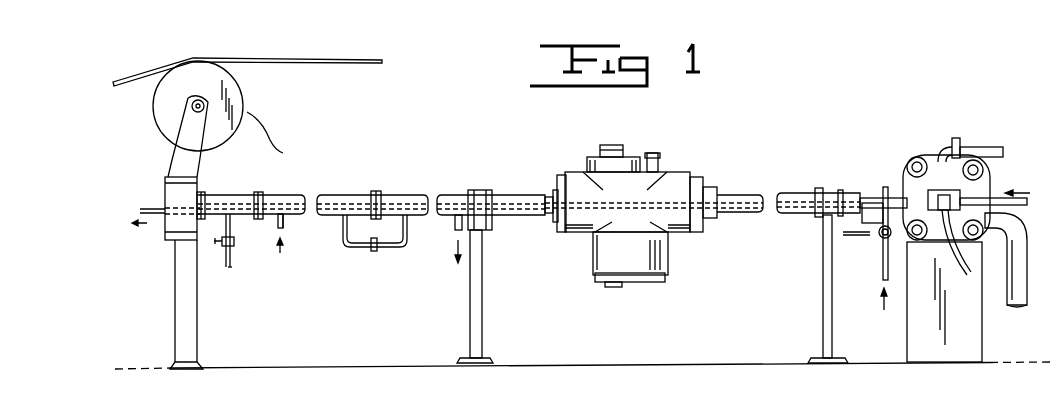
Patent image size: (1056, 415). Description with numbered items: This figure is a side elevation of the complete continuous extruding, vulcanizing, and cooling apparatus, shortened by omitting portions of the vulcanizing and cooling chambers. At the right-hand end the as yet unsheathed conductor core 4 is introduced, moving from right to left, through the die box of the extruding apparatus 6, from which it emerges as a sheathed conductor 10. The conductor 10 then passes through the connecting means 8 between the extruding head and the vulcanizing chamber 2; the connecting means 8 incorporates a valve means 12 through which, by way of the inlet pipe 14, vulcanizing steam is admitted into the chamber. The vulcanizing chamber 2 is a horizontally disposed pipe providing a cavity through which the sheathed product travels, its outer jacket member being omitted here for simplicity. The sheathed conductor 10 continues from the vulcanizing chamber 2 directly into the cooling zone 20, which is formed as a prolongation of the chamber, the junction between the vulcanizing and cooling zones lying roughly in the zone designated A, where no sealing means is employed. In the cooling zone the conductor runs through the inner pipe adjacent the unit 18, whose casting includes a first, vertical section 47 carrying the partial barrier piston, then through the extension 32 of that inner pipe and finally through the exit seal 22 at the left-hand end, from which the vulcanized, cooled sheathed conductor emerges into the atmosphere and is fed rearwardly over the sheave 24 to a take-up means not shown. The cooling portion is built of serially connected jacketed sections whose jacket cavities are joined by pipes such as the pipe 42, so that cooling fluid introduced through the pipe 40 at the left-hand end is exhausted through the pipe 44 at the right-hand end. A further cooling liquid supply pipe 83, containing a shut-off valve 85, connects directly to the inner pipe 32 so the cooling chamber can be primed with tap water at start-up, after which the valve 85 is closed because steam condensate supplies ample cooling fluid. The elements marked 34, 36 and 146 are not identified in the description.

The sheathed conductor 10 is at (313, 50).
The exit seal 22 is at (200, 191).
The sheave 24 is at (283, 153).
The extension of pipe 32 is at (242, 193).
The outlet stub 34 is at (288, 217).
The pipe 40 is at (278, 233).
The shut-off valve 85 is at (238, 262).
The cooling liquid supply pipe 83 is at (228, 280).
The cooling zone 20 is at (345, 186).
The pipe 42 is at (366, 250).
The tube section 36 is at (521, 188).
The pipe 44 is at (455, 230).
The unit 18 is at (668, 165).
The vertical section of casting 47 is at (583, 170).
The zone A is at (650, 211).
The vulcanizing chamber 2 is at (790, 192).
The connecting means 8 is at (897, 190).
The valve means 12 is at (882, 238).
The inlet pipe 14 is at (882, 270).
The extruding apparatus 6 is at (932, 160).
The unsheathed conductor core 4 is at (992, 195).
The section line 146 is at (722, 413).